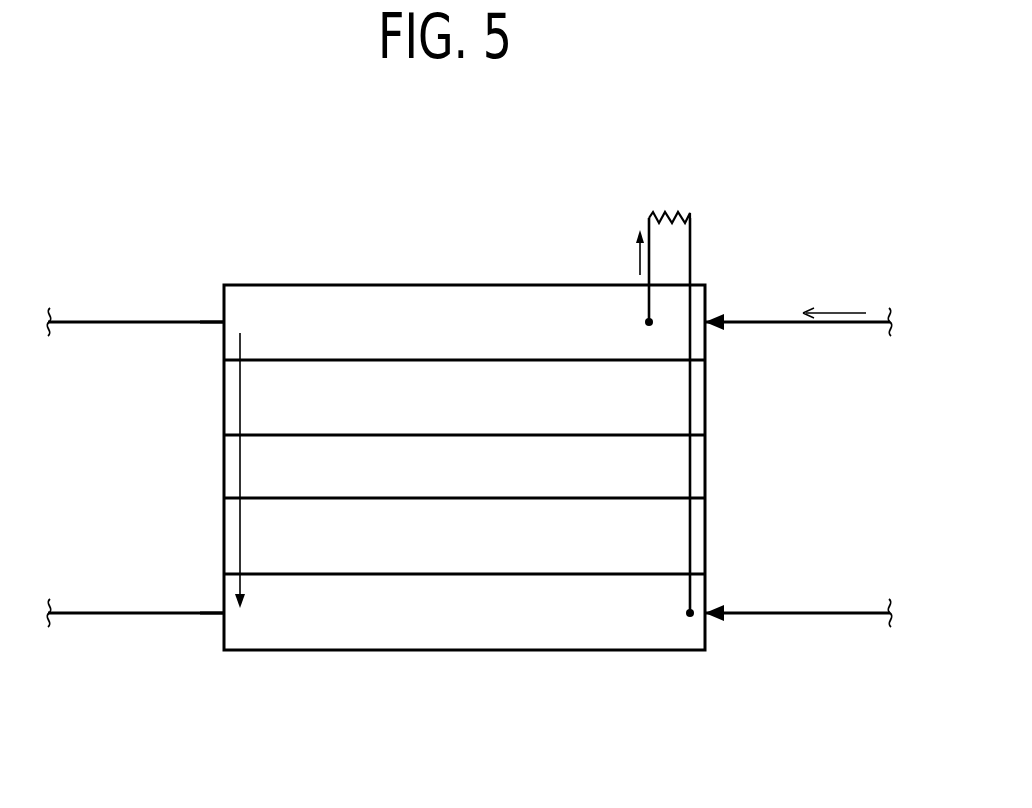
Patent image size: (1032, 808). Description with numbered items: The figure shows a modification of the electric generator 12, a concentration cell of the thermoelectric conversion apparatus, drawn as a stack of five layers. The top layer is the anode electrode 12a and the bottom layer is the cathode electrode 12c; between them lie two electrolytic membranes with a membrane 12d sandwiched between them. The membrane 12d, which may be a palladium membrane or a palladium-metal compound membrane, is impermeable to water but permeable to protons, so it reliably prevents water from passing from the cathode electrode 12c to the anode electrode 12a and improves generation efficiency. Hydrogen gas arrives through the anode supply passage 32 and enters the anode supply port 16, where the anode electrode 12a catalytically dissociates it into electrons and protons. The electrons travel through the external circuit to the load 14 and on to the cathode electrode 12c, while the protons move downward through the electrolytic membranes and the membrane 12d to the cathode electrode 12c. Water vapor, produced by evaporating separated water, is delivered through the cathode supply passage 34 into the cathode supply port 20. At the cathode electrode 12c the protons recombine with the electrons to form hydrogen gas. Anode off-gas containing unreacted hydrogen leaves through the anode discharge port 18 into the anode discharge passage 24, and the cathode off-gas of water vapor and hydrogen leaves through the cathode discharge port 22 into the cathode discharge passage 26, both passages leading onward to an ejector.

The electric generator 12 is at (801, 147).
The anode electrode 12a is at (273, 284).
The cathode electrode 12c is at (275, 652).
The membrane 12d is at (707, 476).
The load 14 is at (669, 210).
The anode supply port 16 is at (707, 321).
The anode discharge port 18 is at (224, 320).
The cathode supply port 20 is at (707, 612).
The cathode discharge port 22 is at (224, 611).
The anode discharge passage 24 is at (124, 320).
The cathode discharge passage 26 is at (127, 610).
The anode supply passage 32 is at (865, 325).
The cathode supply passage 34 is at (827, 617).